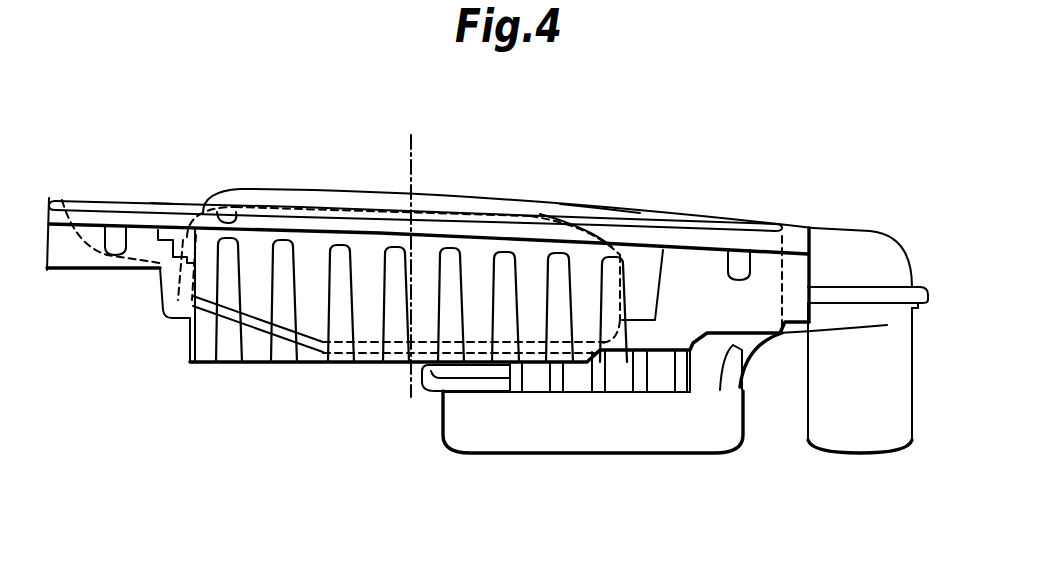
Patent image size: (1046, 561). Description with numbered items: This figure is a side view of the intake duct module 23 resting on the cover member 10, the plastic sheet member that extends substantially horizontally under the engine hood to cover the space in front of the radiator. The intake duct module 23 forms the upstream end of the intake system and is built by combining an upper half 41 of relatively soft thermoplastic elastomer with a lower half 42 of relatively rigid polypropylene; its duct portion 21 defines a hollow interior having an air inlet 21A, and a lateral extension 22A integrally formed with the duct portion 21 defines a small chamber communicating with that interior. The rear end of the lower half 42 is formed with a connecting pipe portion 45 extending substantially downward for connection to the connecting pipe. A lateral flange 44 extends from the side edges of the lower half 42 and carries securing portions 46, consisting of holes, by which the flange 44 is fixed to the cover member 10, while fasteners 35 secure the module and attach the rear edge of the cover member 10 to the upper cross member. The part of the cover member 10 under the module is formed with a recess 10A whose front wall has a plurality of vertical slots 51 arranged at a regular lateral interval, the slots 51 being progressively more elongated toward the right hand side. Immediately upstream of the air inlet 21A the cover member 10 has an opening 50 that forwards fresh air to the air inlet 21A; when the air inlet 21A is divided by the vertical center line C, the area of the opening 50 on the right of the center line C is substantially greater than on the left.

The cover member 10 is at (64, 190).
The recess 10A is at (182, 334).
The duct portion 21 is at (285, 194).
The air inlet 21A is at (232, 185).
The intake duct module 23 is at (604, 202).
The fasteners 35 is at (112, 252).
The upper half 41 is at (868, 250).
The lower half 42 is at (895, 362).
The lateral extension 22A is at (850, 432).
The lateral flange 44 is at (160, 199).
The connecting pipe portion 45 is at (453, 432).
The securing portions 46 is at (108, 208).
The opening 50 is at (342, 362).
The slots 51 is at (277, 353).
The vertical center line C is at (412, 148).